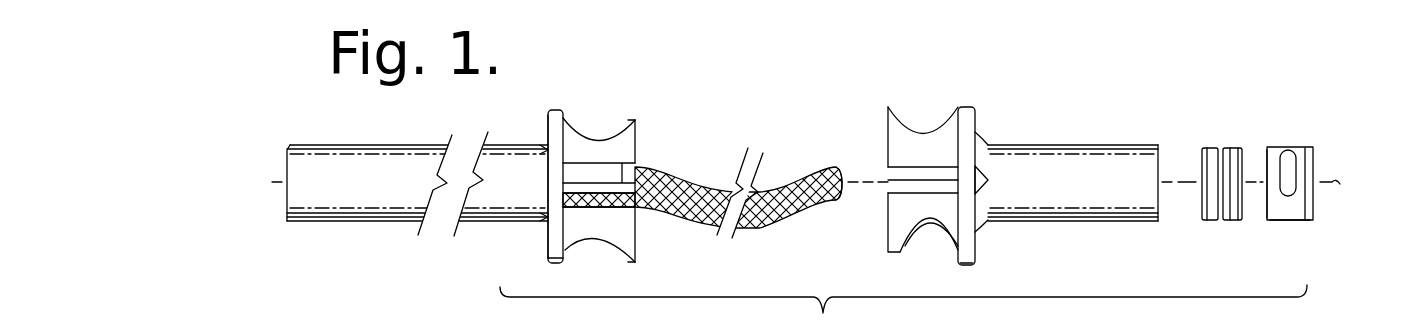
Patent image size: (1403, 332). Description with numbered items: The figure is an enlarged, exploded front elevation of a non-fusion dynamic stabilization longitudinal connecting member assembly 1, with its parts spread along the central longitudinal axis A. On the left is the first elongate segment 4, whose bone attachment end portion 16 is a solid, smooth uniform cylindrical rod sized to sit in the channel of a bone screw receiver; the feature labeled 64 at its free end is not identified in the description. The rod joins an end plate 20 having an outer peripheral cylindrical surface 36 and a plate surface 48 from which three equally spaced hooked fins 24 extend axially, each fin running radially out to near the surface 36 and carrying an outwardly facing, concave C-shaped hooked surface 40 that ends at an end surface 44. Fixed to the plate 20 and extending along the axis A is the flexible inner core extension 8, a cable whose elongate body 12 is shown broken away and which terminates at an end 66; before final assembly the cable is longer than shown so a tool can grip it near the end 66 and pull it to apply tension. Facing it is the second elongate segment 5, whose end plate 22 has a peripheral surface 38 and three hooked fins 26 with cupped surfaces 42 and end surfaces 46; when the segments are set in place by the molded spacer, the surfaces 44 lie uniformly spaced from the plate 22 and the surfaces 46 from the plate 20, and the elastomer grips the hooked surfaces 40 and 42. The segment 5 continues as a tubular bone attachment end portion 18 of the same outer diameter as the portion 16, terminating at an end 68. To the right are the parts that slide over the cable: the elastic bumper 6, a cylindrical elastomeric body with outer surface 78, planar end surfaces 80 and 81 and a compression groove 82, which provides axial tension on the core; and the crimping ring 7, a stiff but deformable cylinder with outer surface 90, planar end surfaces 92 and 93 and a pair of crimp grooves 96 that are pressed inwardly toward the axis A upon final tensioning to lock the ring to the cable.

The dynamic stabilization longitudinal connecting member assembly 1 is at (993, 70).
The first elongate segment 4 is at (648, 105).
The second elongate segment 5 is at (1058, 228).
The elastic bumper 6 is at (1246, 176).
The crimping ring 7 is at (1313, 182).
The inner core extension 8 is at (738, 194).
The core body 12 is at (758, 228).
The bone attachment end portion 16 is at (410, 197).
The bone attachment end portion 18 is at (1086, 179).
The end plate 20 is at (562, 112).
The end plate 22 is at (962, 106).
The hooked fin 24 is at (628, 118).
The hooked fin 26 is at (893, 183).
The outer peripheral cylindrical surface 36 is at (556, 108).
The outer peripheral cylindrical surface 38 is at (970, 265).
The hooked surface 40 is at (577, 136).
The hooked surface 42 is at (930, 133).
The end surface 44 is at (637, 135).
The end surface 46 is at (887, 148).
The plate surface 48 is at (560, 240).
The first tube end 64 is at (286, 232).
The cable end 66 is at (838, 170).
The tubular end portion end 68 is at (1160, 224).
The outer surface 78 is at (1232, 222).
The end surface 80 is at (1200, 182).
The end surface 81 is at (1241, 147).
The compression groove 82 is at (1212, 222).
The outer surface 90 is at (1290, 222).
The end surface 92 is at (1268, 222).
The end surface 93 is at (1313, 206).
The crimp groove 96 is at (1293, 160).